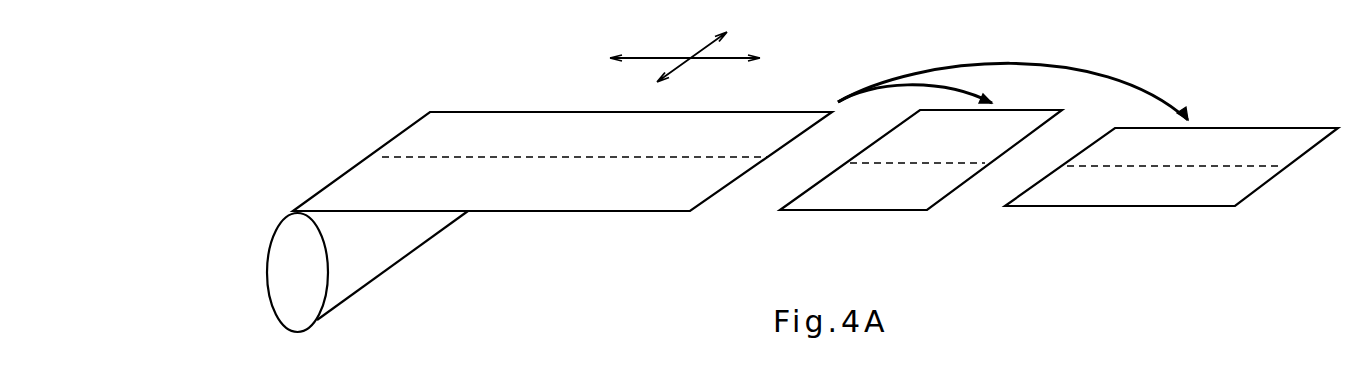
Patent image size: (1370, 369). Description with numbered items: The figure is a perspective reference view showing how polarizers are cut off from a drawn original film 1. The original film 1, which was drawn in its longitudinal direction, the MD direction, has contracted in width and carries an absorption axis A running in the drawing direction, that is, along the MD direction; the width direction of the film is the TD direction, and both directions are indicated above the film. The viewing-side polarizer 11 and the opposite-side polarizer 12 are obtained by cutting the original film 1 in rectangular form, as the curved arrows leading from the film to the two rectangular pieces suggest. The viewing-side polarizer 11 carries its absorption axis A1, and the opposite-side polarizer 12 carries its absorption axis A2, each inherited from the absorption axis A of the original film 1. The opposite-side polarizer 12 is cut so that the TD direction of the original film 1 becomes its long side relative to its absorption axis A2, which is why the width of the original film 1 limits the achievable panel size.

The original film 1 is at (547, 193).
The absorption axis A is at (712, 157).
The viewing-side polarizer 11 is at (1220, 195).
The opposite-side polarizer 12 is at (918, 193).
The absorption axis of the viewing-side polarizer A1 is at (1122, 166).
The absorption axis of the opposite-side polarizer A2 is at (880, 163).
The TD direction TD is at (699, 50).
The MD direction MD is at (728, 58).